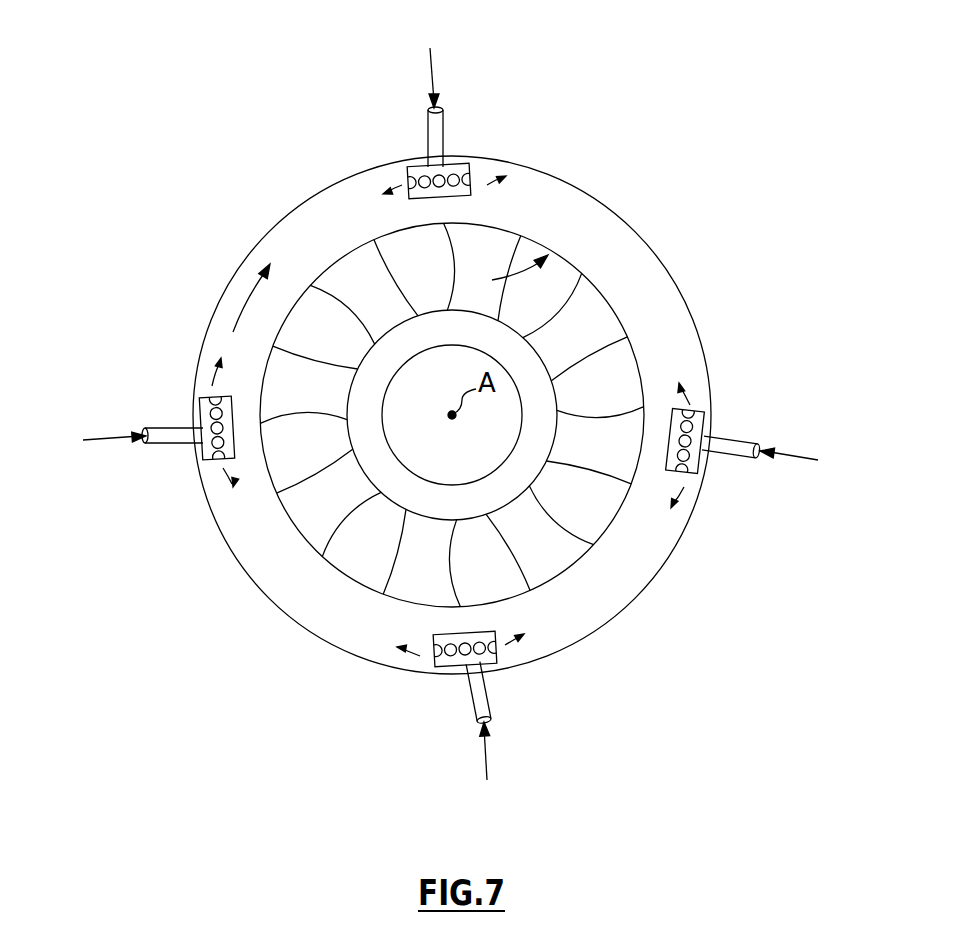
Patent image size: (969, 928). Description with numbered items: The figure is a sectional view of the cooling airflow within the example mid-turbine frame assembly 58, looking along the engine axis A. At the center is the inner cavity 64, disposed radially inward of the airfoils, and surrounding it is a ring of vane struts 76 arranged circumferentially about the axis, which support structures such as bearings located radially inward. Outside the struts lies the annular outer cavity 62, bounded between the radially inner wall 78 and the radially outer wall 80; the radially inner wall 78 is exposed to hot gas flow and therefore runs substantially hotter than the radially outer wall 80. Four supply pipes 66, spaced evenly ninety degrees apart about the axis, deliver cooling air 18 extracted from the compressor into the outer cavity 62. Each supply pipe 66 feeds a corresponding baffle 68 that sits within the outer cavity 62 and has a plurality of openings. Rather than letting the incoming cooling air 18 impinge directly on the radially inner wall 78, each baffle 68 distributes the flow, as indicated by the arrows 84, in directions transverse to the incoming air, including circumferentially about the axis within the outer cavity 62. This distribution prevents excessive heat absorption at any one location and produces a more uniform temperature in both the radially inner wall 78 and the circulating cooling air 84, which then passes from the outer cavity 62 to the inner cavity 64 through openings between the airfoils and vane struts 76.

The cooling air 18 is at (430, 48).
The mid-turbine frame assembly 58 is at (745, 170).
The outer cavity 62 is at (292, 604).
The inner cavity 64 is at (398, 352).
The supply pipe 66 is at (440, 131).
The baffle 68 is at (456, 167).
The vane strut 76 is at (332, 322).
The radially inner wall 78 is at (505, 275).
The radially outer wall 80 is at (620, 205).
The cooling air flow arrows 84 is at (503, 181).